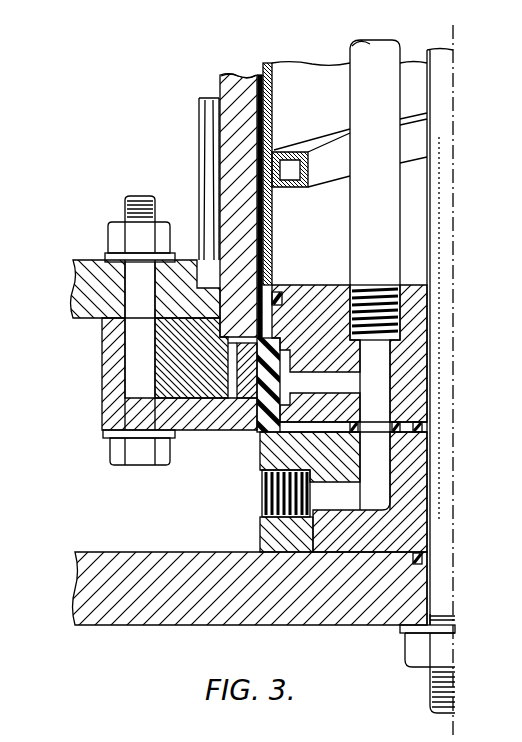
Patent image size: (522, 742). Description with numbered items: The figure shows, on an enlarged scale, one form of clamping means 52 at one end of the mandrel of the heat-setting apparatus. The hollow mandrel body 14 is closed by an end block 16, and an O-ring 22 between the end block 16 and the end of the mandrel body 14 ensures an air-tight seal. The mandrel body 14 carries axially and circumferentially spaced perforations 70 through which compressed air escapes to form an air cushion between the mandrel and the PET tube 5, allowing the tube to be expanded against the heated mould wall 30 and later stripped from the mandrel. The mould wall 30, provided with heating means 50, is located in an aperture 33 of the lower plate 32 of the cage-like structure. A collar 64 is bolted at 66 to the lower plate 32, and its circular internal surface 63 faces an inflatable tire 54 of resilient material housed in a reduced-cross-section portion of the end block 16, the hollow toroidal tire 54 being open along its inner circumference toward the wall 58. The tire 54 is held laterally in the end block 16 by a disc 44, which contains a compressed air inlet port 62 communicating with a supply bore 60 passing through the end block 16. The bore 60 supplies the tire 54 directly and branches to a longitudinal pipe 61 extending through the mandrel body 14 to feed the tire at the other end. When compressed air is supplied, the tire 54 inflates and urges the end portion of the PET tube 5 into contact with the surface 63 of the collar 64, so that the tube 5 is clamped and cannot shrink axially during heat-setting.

The PET tube 5 is at (262, 68).
The mandrel body 14 is at (271, 108).
The perforations 70 is at (258, 92).
The heating means 50 is at (199, 110).
The mould wall 30 is at (224, 168).
The longitudinal pipe 61 is at (388, 232).
The aperture 33 is at (240, 282).
The O-rings 22 is at (278, 294).
The wall 58 is at (329, 338).
The end block 16 is at (418, 297).
The lower plate 32 is at (78, 293).
The bolt 66 is at (138, 368).
The supply bore 60 is at (417, 403).
The collar 64 is at (197, 413).
The circular internal surface 63 is at (258, 440).
The inflatable tire 54 is at (259, 459).
The clamping means 52 is at (238, 491).
The compressed air inlet port 62 is at (260, 503).
The disc 44 is at (330, 532).